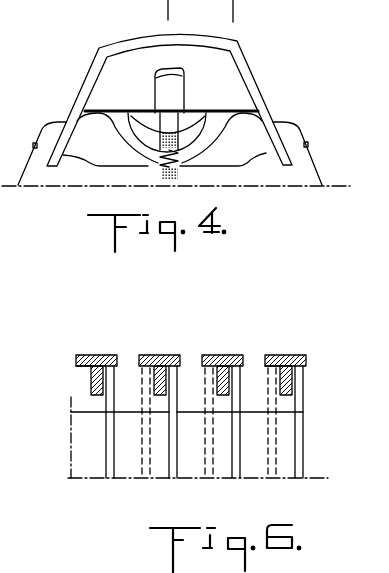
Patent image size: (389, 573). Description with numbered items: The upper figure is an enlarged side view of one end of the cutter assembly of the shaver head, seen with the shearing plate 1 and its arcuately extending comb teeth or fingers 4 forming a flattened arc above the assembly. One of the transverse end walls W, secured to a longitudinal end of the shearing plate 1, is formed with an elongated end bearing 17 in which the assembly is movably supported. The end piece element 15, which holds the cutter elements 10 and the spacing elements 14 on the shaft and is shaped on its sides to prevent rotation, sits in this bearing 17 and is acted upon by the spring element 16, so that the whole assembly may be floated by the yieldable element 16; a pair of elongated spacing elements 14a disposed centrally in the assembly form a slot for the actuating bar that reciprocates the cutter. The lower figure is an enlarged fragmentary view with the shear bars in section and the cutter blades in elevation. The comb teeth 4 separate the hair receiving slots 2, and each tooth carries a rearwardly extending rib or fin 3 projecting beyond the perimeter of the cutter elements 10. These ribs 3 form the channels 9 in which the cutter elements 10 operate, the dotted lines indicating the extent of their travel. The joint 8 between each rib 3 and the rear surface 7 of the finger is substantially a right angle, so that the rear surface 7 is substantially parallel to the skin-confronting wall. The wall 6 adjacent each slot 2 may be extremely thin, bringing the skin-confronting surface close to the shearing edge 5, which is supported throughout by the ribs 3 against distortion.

In FIG. 4, the shearing plate 1 is at (267, 97).
In FIG. 4, the comb teeth or fingers 4 is at (123, 43).
In FIG. 6, the comb teeth or fingers 4 is at (283, 356).
In FIG. 4, the transverse end walls W is at (235, 78).
In FIG. 4, the end piece elements 15 is at (170, 89).
In FIG. 4, the elongated end bearings 17 is at (163, 72).
In FIG. 4, the spacing elements 14 is at (140, 125).
In FIG. 6, the spacing elements 14 is at (253, 460).
In FIG. 4, the elongated spacing elements 14a is at (190, 130).
In FIG. 4, the spring elements 16 is at (148, 165).
In FIG. 6, the hair receiving slots 2 is at (147, 356).
In FIG. 6, the ribs or fins 3 is at (97, 387).
In FIG. 6, the shearing edge 5 is at (118, 364).
In FIG. 6, the wall or portion of the finger 6 is at (76, 356).
In FIG. 6, the rear surface of the fingers 7 is at (80, 365).
In FIG. 6, the joint 8 is at (155, 375).
In FIG. 6, the channels 9 is at (121, 379).
In FIG. 6, the cutter elements 10 is at (168, 462).